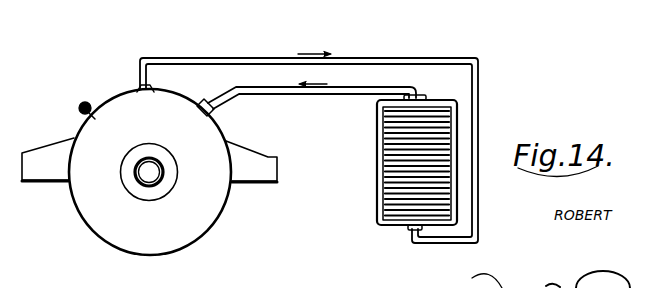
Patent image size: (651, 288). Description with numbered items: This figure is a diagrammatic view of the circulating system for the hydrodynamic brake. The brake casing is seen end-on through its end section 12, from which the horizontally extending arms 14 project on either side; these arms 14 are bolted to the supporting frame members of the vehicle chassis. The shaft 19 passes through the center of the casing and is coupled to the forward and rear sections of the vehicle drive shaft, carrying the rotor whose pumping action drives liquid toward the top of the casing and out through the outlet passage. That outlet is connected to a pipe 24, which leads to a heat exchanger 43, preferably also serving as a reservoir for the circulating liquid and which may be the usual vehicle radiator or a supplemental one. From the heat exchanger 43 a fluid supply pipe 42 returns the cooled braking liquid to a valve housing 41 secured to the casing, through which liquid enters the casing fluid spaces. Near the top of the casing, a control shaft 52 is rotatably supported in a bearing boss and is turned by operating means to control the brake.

The end section 12 is at (150, 172).
The horizontally extending arms 14 is at (51, 152).
The shaft 19 is at (149, 173).
The pipe 24 is at (238, 58).
The valve housing 41 is at (207, 100).
The fluid supply pipe 42 is at (332, 95).
The heat exchanger 43 is at (378, 158).
The control shaft 52 is at (86, 102).